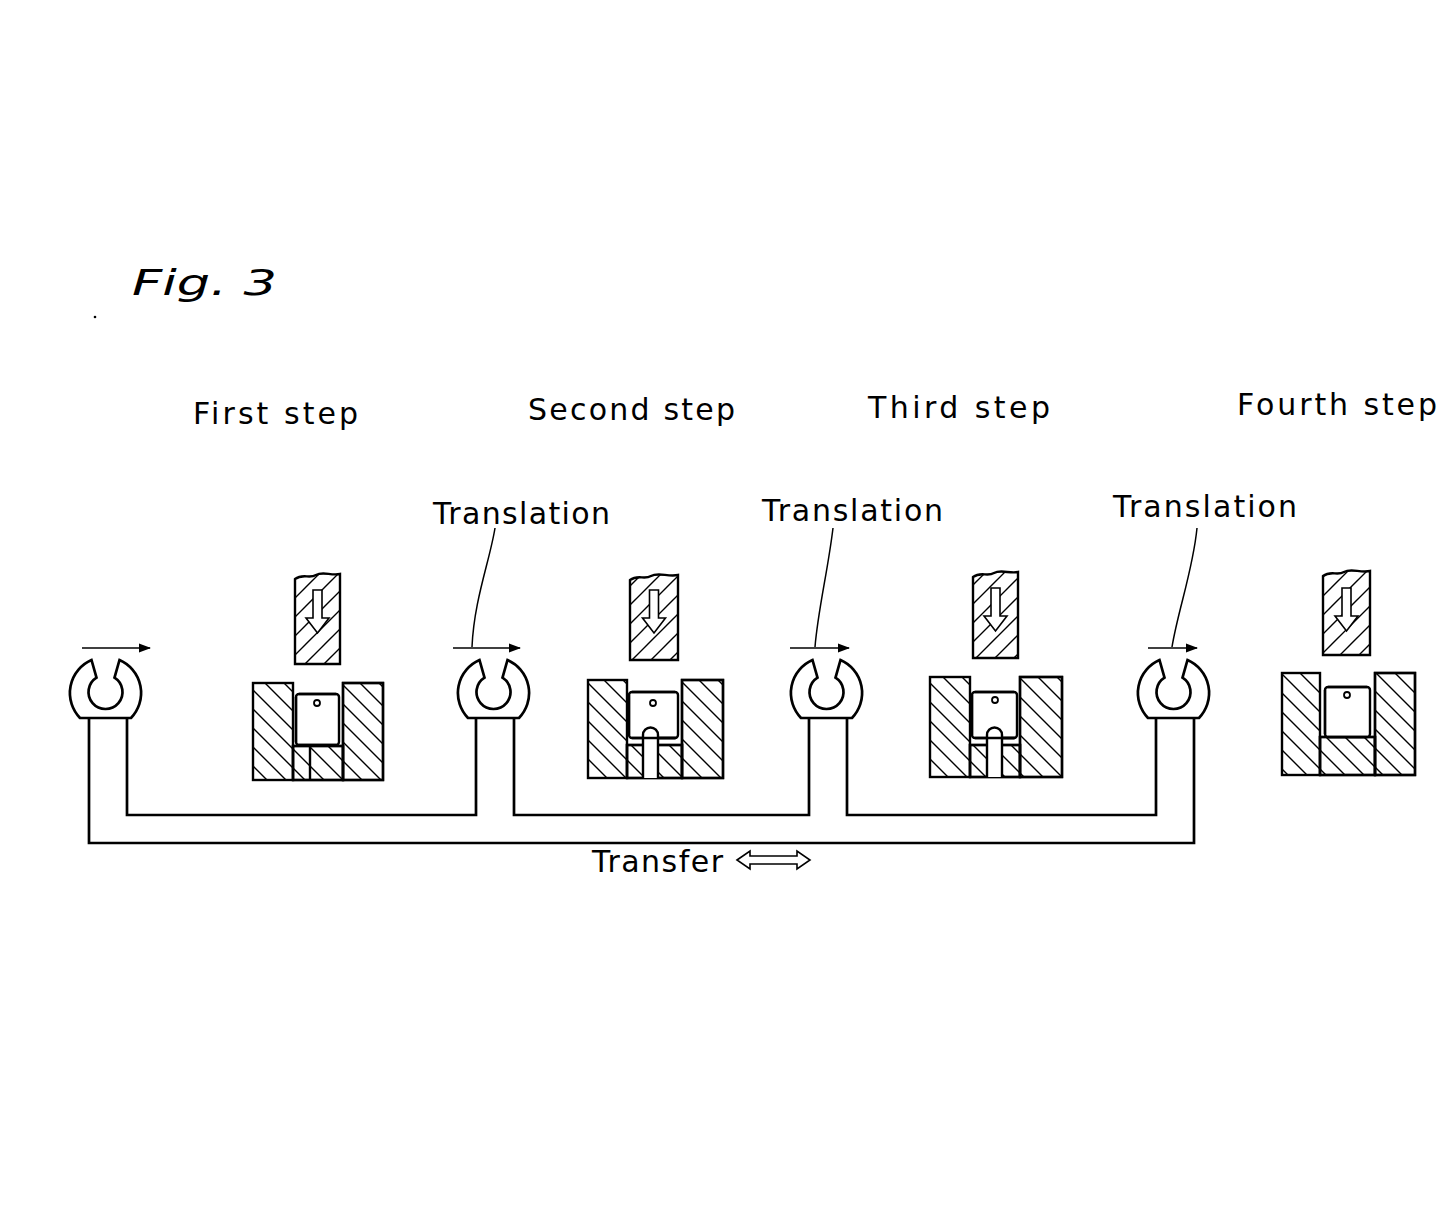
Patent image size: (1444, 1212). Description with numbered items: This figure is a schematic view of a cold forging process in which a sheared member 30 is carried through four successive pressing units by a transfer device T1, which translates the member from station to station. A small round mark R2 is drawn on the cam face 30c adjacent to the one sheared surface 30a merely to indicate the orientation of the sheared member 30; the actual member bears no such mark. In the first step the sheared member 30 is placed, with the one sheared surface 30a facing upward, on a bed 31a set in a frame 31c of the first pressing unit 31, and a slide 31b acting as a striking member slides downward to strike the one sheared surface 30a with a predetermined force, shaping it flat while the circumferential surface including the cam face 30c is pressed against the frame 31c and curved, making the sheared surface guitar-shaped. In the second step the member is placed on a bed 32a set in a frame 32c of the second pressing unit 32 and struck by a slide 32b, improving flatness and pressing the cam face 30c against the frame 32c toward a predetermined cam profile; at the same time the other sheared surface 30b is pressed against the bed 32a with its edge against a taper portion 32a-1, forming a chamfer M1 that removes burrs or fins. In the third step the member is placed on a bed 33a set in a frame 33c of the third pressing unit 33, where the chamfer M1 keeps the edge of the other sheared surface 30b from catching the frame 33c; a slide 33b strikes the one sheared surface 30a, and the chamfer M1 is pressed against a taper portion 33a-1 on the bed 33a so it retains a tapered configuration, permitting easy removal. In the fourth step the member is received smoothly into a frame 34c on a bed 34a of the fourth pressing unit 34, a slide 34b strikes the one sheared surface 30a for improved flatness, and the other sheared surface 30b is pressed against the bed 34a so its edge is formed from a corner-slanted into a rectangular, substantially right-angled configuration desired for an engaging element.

The sheared member 30 is at (331, 688).
The one sheared surface 30a is at (308, 693).
The other sheared surface 30b is at (307, 780).
The cam face 30c is at (294, 724).
The first pressing unit 31 is at (268, 632).
The bed 31a is at (337, 783).
The slide 31b is at (338, 599).
The frame 31c is at (366, 722).
The second pressing unit 32 is at (614, 615).
The bed 32a is at (676, 785).
The taper portion 32a-1 is at (655, 748).
The slide 32b is at (679, 598).
The frame 32c is at (712, 709).
The third pressing unit 33 is at (952, 621).
The bed 33a is at (1012, 784).
The taper portion 33a-1 is at (1003, 745).
The slide 33b is at (1021, 591).
The frame 33c is at (1050, 709).
The fourth pressing unit 34 is at (1312, 634).
The bed 34a is at (1338, 766).
The slide 34b is at (1372, 584).
The frame 34c is at (1397, 765).
The small round mark R2 is at (313, 703).
The chamfer M1 is at (690, 741).
The transfer device T1 is at (355, 844).